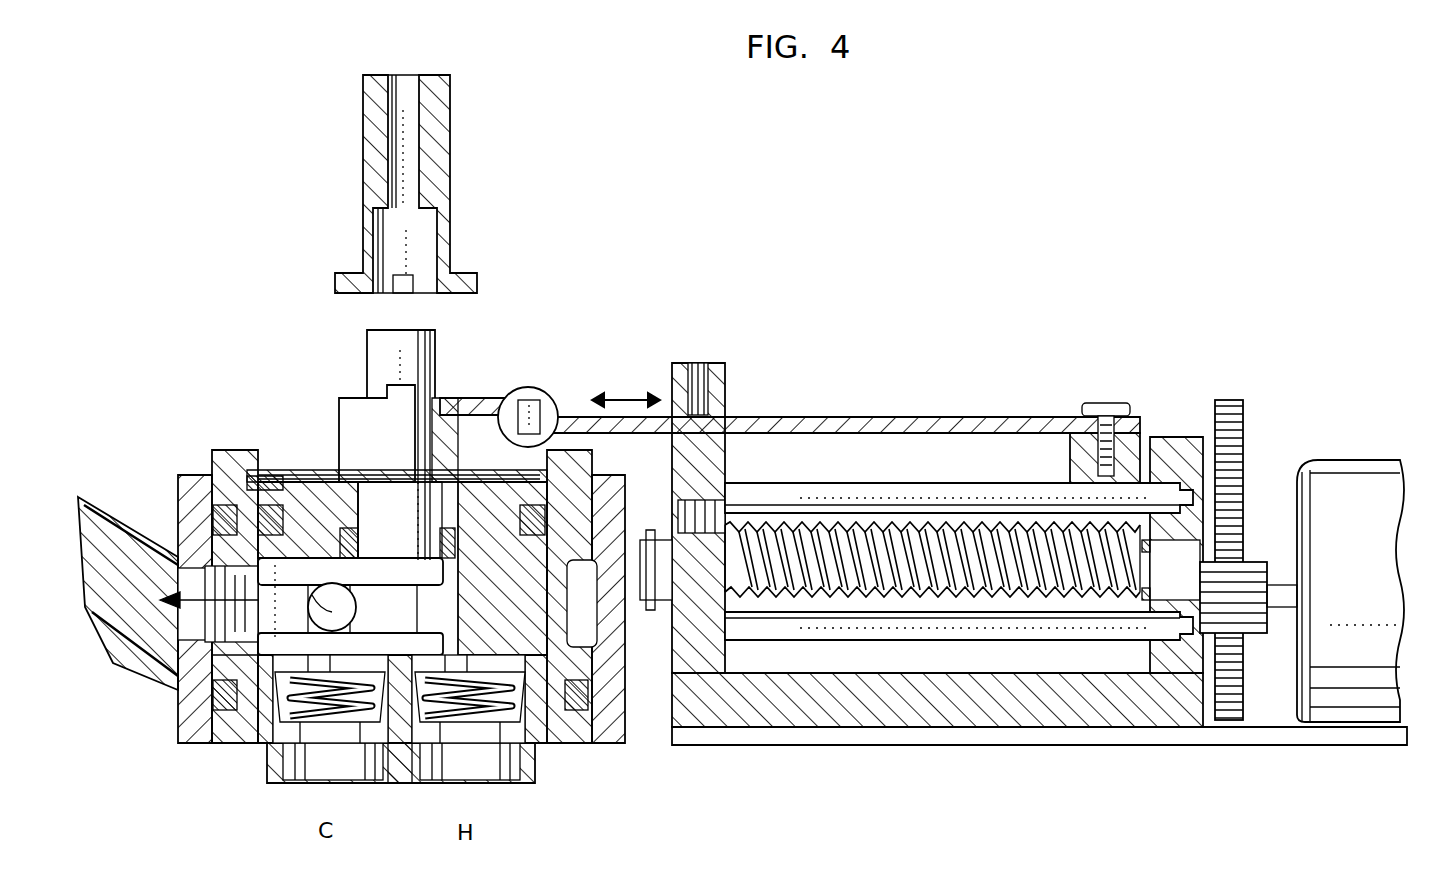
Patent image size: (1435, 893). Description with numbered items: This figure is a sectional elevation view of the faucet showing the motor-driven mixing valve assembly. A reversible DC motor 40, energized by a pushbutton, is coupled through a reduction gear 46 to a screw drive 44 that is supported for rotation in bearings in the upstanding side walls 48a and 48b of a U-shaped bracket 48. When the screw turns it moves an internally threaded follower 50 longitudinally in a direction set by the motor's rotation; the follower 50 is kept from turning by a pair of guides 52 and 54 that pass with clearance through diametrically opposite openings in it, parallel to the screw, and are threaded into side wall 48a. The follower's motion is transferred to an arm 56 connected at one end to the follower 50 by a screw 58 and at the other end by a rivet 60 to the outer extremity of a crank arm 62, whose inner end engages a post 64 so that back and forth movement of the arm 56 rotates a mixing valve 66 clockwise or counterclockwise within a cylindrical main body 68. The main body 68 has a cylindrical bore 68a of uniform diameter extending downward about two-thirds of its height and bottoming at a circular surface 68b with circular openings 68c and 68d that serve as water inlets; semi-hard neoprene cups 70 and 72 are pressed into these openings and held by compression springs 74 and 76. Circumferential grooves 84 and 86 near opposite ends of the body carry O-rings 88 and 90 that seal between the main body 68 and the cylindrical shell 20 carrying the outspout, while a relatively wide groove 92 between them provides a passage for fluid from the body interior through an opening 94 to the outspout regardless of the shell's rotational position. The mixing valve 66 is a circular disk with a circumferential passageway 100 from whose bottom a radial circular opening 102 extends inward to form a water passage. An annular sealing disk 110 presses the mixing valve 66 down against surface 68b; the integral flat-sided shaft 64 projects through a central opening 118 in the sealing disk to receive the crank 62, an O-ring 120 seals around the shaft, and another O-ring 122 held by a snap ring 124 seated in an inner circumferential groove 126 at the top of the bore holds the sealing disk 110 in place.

The cylindrical shell 20 is at (178, 690).
The reversible DC motor 40 is at (1363, 507).
The screw drive 44 is at (800, 520).
The reduction gear 46 is at (1255, 618).
The U-shaped bracket 48 is at (1077, 715).
The upstanding side wall 48a is at (726, 385).
The upstanding side wall 48b is at (1185, 435).
The internally threaded follower 50 is at (1070, 456).
The guide 52 is at (918, 486).
The guide 54 is at (1030, 632).
The arm 56 is at (1003, 416).
The screw 58 is at (1106, 400).
The rivet 60 is at (552, 392).
The crank arm 62 is at (487, 392).
The post 64 is at (413, 348).
The mixing valve 66 is at (540, 630).
The main body 68 is at (235, 728).
The cylindrical bore 68a is at (225, 530).
The circular surface 68b is at (530, 660).
The circular opening 68c is at (298, 775).
The circular opening 68d is at (530, 735).
The neoprene cup 70 is at (370, 700).
The neoprene cup 72 is at (500, 725).
The compression spring 74 is at (352, 722).
The compression spring 76 is at (455, 712).
The circumferential groove 84 is at (222, 470).
The circumferential groove 86 is at (213, 732).
The O-ring 88 is at (205, 520).
The O-ring 90 is at (220, 697).
The wide groove 92 is at (572, 600).
The opening 94 is at (190, 597).
The circumferential passageway 100 is at (380, 582).
The circular opening 102 is at (352, 607).
The annular sealing disk 110 is at (330, 490).
The central opening 118 is at (365, 480).
The O-ring 120 is at (448, 540).
The O-ring 122 is at (592, 462).
The snap ring 124 is at (250, 495).
The inner circumferential groove 126 is at (255, 450).